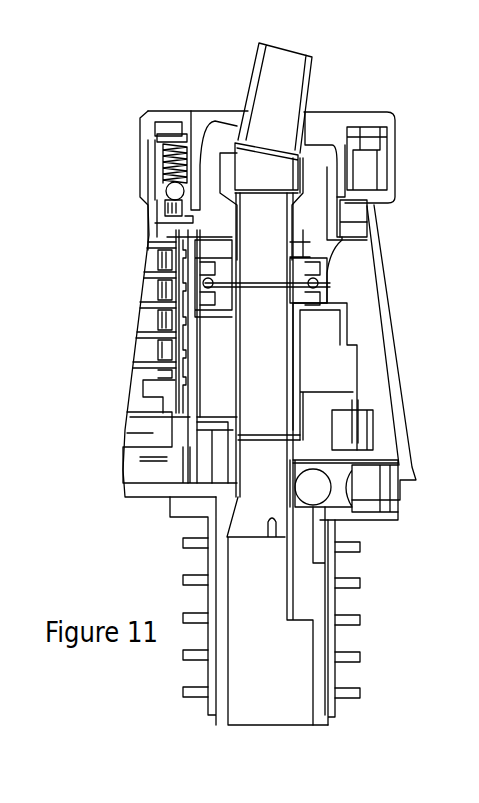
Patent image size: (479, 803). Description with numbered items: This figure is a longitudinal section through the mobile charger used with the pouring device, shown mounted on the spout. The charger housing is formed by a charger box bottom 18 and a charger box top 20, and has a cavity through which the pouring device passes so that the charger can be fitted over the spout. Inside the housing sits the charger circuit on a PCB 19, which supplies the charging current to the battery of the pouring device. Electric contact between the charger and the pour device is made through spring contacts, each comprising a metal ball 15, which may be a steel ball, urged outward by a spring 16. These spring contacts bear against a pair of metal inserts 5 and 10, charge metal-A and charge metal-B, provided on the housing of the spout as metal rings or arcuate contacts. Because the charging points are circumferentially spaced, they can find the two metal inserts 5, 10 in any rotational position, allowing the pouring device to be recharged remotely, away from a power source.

The charger box bottom 18 is at (145, 117).
The PCB 19 is at (183, 138).
The spring 16 is at (160, 165).
The charger box top 20 is at (158, 188).
The metal ball 15 is at (163, 202).
The metal insert 5 is at (183, 208).
The metal insert 10 is at (363, 212).